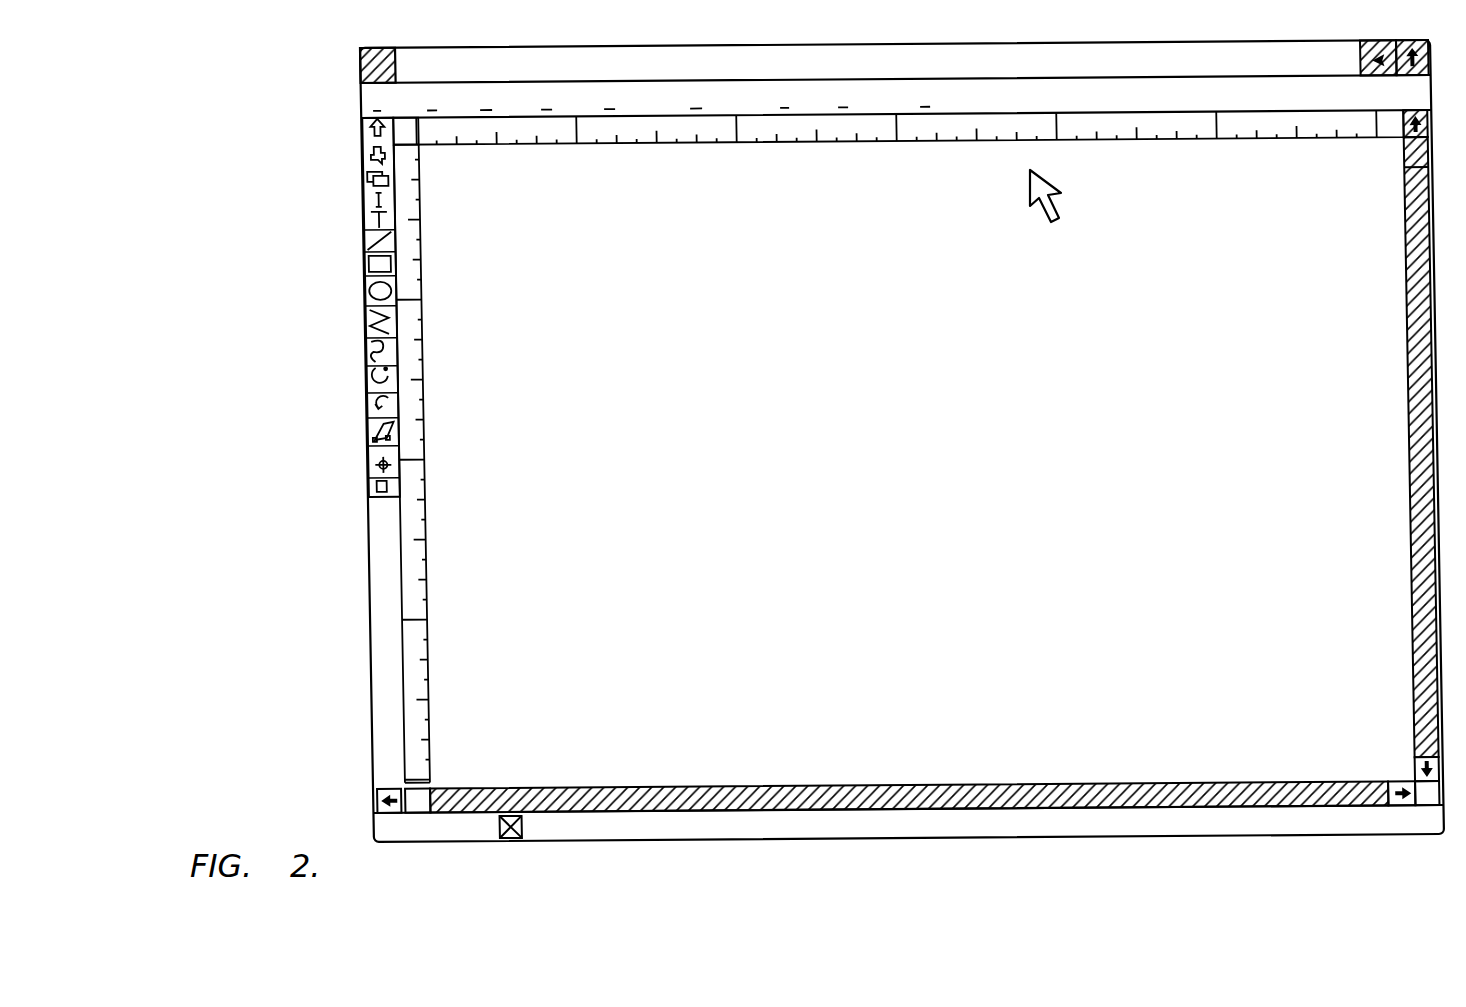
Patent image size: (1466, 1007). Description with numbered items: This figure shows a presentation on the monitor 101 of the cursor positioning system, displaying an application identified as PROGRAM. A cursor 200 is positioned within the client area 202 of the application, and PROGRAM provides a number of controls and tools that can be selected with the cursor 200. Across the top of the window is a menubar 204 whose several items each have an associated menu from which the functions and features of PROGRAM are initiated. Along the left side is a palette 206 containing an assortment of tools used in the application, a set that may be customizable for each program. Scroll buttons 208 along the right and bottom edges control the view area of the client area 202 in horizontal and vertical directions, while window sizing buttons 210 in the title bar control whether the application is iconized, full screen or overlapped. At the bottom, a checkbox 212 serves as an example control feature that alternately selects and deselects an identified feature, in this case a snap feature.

The monitor 101 is at (900, 26).
The cursor 200 is at (1064, 201).
The client area 202 is at (975, 402).
The menubar 204 is at (992, 95).
The palette 206 is at (388, 512).
The scroll buttons 208 is at (1404, 142).
The window sizing buttons 210 is at (1401, 40).
The checkbox 212 is at (515, 842).